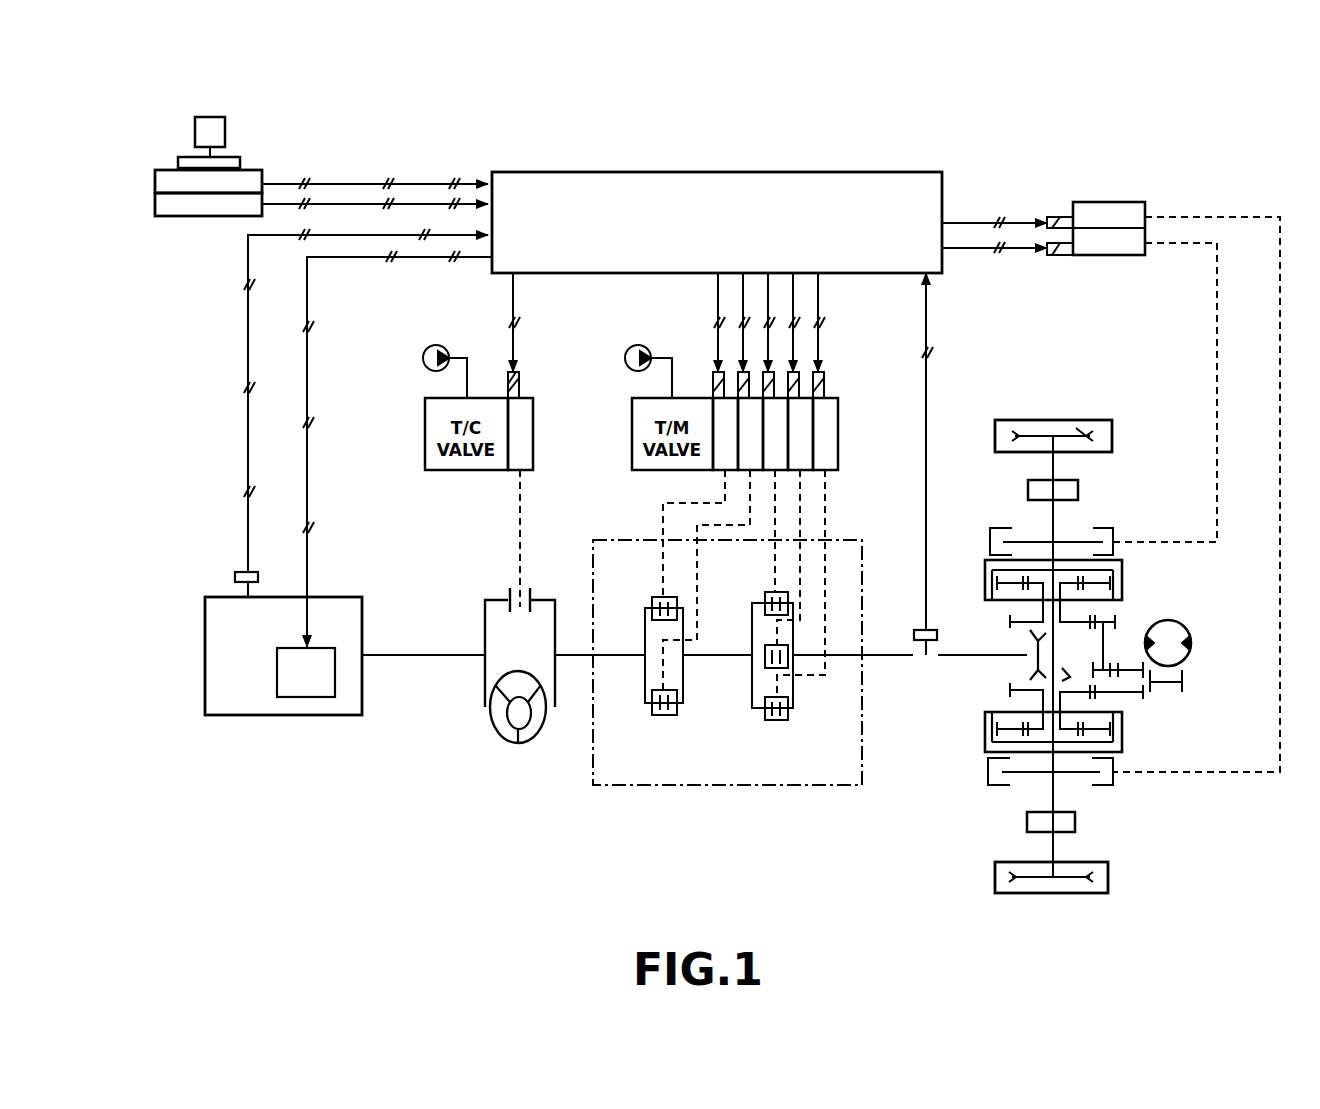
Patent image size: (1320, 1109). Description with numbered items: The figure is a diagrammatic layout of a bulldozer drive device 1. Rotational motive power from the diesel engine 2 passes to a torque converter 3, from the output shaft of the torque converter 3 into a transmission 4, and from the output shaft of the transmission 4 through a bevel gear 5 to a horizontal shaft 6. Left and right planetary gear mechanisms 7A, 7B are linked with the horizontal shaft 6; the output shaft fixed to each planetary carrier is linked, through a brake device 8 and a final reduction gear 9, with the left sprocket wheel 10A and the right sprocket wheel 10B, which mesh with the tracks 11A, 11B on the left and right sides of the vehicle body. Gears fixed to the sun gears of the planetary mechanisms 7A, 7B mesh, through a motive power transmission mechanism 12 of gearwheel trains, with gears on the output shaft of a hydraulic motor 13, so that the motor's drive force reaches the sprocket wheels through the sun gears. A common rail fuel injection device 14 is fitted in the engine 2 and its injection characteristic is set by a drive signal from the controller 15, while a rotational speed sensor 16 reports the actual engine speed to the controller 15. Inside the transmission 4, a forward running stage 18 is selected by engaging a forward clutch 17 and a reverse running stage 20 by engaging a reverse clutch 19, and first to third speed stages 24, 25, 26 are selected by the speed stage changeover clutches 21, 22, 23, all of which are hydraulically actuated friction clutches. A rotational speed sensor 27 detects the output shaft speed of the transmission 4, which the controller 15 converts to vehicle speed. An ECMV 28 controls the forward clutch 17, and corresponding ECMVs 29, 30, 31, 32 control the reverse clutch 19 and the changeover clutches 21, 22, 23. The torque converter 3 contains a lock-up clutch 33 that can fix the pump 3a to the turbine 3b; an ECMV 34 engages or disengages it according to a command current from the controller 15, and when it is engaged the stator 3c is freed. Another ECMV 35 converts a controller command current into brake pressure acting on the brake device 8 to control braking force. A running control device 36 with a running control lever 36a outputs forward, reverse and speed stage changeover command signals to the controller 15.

The drive device 1 is at (1193, 185).
The engine 2 is at (280, 715).
The torque converter 3 is at (512, 745).
The pump 3a is at (490, 718).
The turbine 3b is at (546, 720).
The stator 3c is at (519, 697).
The transmission 4 is at (741, 790).
The bevel gear 5 is at (1025, 660).
The horizontal shaft 6 is at (1057, 652).
The left planetary gear mechanism 7A is at (983, 718).
The right planetary gear mechanism 7B is at (983, 585).
The brake device 8 is at (1005, 528).
The final reduction gear 9 is at (1078, 488).
The left sprocket wheel 10A is at (1075, 880).
The right sprocket wheel 10B is at (1075, 432).
The left track 11A is at (995, 870).
The right track 11B is at (1030, 420).
The motive power transmission mechanism 12 is at (1130, 703).
The hydraulic motor 13 is at (1175, 622).
The common rail fuel injection device 14 is at (325, 697).
The controller 15 is at (738, 254).
The rotational speed sensor 16 is at (240, 572).
The forward clutch 17 is at (652, 612).
The forward running stage 18 is at (656, 597).
The reverse clutch 19 is at (652, 698).
The reverse running stage 20 is at (660, 715).
The speed stage changeover clutch 21 is at (765, 600).
The speed stage changeover clutch 22 is at (765, 652).
The speed stage changeover clutch 23 is at (767, 720).
The first speed stage 24 is at (790, 605).
The second speed stage 25 is at (790, 662).
The third speed stage 26 is at (790, 722).
The rotational speed sensor 27 is at (925, 630).
The ECMV 28 is at (720, 470).
The ECMV 29 is at (745, 470).
The ECMV 30 is at (770, 470).
The ECMV 31 is at (795, 470).
The ECMV 32 is at (815, 470).
The lock-up clutch 33 is at (485, 608).
The ECMV 34 is at (535, 412).
The ECMV 35 is at (1135, 202).
The running control device 36 is at (263, 158).
The running control lever 36a is at (195, 130).